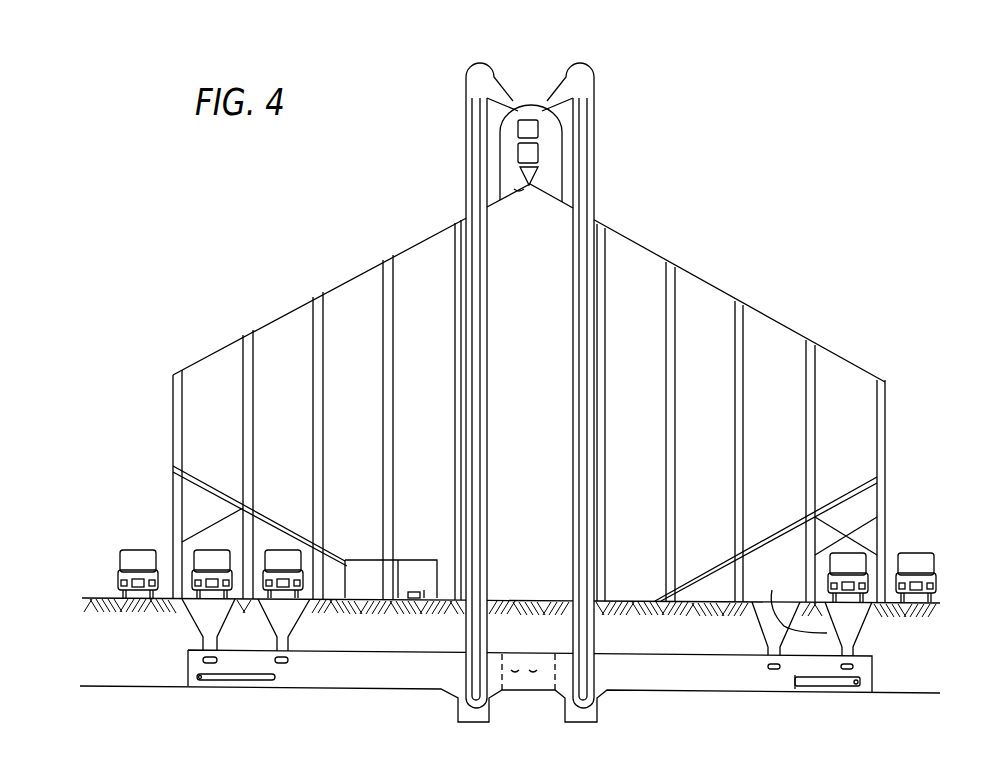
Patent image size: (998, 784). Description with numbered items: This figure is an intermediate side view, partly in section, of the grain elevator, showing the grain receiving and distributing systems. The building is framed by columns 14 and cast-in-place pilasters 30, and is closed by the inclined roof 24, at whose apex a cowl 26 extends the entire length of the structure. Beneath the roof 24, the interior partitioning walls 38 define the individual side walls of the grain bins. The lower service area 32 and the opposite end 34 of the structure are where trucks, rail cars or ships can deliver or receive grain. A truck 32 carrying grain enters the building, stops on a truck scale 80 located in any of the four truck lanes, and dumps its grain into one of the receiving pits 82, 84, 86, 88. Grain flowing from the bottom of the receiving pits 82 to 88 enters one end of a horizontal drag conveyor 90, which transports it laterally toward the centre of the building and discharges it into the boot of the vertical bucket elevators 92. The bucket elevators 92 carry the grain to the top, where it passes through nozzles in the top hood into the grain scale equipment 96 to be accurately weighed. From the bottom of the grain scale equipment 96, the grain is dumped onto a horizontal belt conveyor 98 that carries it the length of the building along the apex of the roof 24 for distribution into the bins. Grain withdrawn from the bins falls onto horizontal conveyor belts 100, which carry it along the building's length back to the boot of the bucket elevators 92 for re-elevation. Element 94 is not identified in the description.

The columns 14 is at (760, 570).
The inclined roof 24 is at (400, 250).
The cowl 26 is at (532, 95).
The pilasters 30 is at (260, 376).
The truck 32 is at (143, 541).
The end of the structure 34 is at (913, 550).
The interior partitioning walls 38 is at (702, 303).
The truck scale 80 is at (752, 571).
The receiving pit 82 is at (192, 629).
The receiving pit 84 is at (298, 633).
The receiving pit 86 is at (755, 634).
The receiving pit 88 is at (863, 641).
The horizontal drag conveyor 90 is at (240, 672).
The vertical bucket elevator 92 is at (475, 710).
The bucket elevator 94 is at (500, 68).
The grain scale equipment 96 is at (535, 175).
The horizontal belt conveyor 98 is at (544, 196).
The horizontal conveyor belts 100 is at (532, 632).